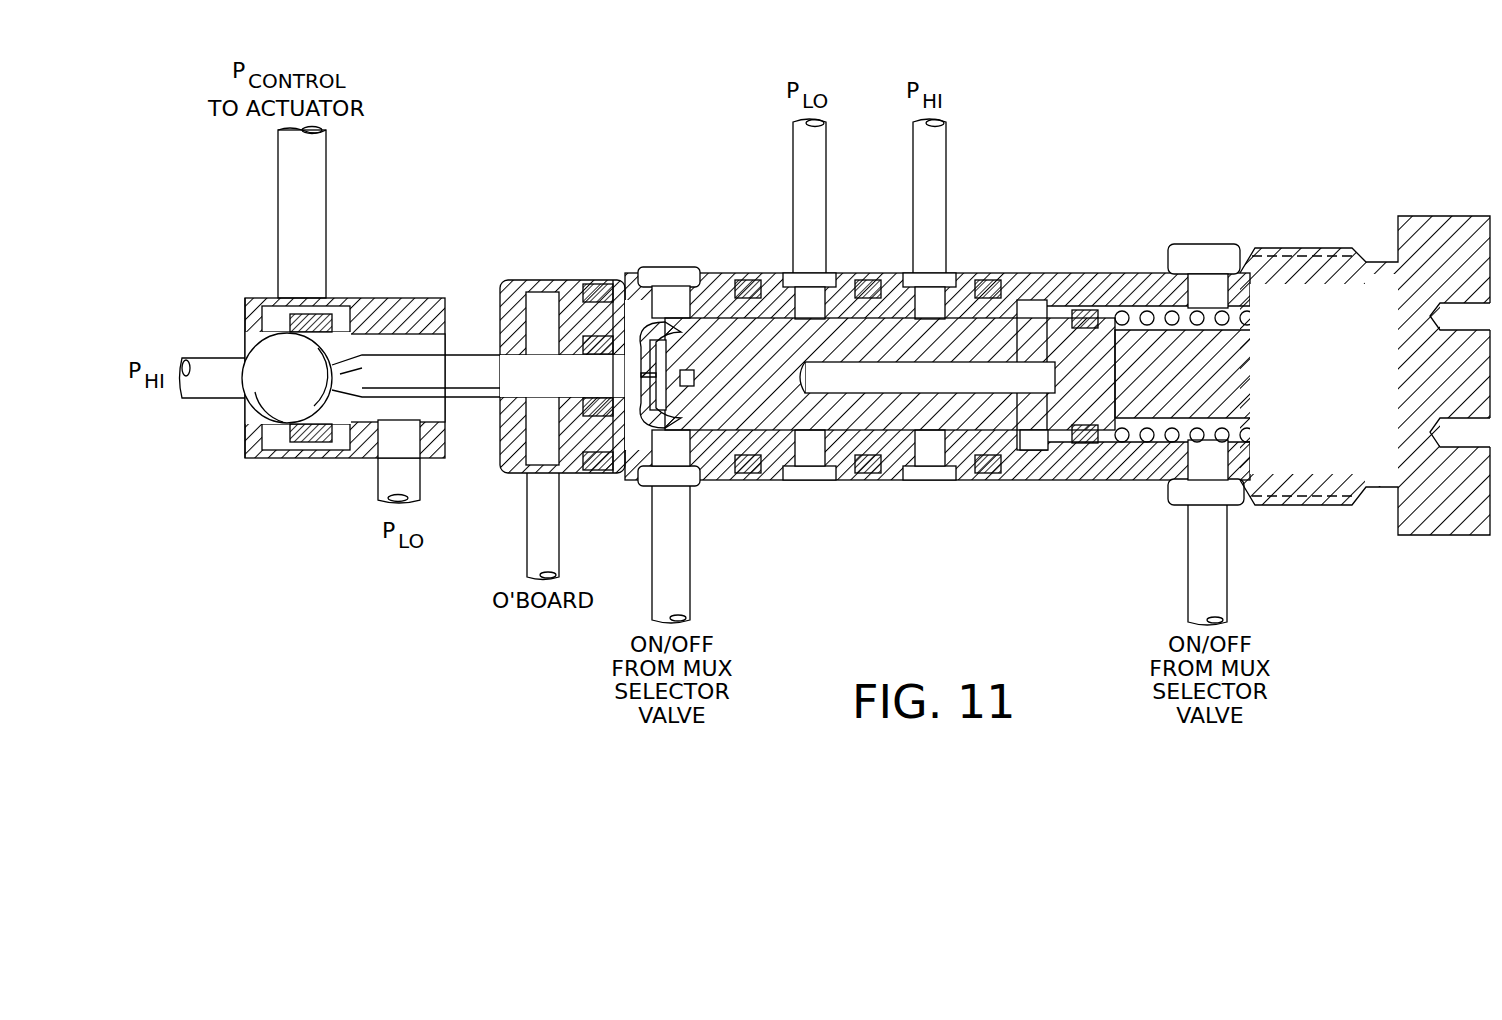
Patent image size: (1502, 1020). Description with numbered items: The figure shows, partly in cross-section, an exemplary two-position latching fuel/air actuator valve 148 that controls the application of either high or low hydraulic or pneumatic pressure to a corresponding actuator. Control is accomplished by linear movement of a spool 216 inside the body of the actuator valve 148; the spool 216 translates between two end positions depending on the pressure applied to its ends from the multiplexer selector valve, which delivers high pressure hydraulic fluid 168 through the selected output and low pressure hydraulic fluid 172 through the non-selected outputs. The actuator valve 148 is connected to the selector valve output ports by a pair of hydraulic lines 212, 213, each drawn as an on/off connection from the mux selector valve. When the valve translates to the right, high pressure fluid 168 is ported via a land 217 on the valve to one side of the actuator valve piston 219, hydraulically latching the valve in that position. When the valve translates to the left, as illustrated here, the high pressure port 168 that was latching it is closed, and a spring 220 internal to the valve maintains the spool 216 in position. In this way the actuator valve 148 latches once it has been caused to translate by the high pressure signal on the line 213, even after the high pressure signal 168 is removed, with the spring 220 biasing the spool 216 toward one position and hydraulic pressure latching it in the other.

The fuel/air actuator valve 148 is at (1208, 224).
The high pressure hydraulic fluid 168 is at (932, 78).
The low pressure hydraulic fluid 172 is at (810, 78).
The hydraulic line 212 is at (680, 557).
The hydraulic line 213 is at (1218, 563).
The spool 216 is at (995, 322).
The land 217 is at (780, 315).
The actuator valve piston 219 is at (1040, 440).
The spring 220 is at (1289, 313).